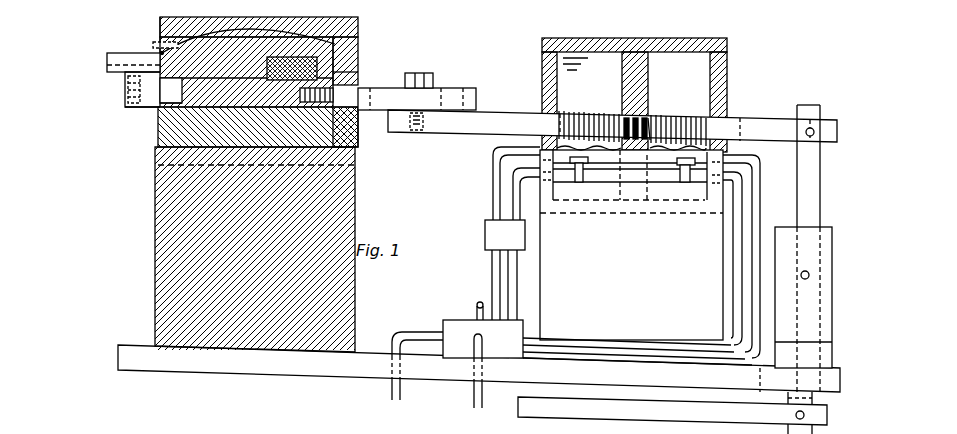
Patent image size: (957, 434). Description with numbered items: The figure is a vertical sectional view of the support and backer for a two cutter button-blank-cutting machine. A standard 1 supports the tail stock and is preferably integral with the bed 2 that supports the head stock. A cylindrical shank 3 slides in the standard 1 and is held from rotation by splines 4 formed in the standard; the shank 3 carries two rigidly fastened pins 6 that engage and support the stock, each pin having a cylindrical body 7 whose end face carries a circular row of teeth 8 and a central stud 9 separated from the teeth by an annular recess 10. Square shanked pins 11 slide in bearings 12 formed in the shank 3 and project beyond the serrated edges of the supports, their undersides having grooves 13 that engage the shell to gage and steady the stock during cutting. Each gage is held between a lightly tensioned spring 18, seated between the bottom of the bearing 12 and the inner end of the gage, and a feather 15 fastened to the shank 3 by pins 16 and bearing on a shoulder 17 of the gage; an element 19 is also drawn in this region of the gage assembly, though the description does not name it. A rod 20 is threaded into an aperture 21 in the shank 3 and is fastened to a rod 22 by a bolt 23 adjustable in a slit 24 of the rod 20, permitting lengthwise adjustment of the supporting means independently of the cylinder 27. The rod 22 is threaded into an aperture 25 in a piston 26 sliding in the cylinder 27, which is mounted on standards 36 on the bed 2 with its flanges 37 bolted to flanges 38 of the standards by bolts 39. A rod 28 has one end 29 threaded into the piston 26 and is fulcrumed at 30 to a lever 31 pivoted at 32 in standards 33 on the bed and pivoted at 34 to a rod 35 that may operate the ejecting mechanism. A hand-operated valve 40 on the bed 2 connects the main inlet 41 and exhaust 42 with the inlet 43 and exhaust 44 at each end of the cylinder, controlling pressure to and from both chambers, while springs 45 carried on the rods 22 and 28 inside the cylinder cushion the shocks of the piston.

The standard 1 is at (155, 246).
The bed 2 is at (479, 368).
The cylindrical shank 3 is at (158, 136).
The splines 4 is at (355, 165).
The pins 6 is at (168, 99).
The cylindrical body 7 is at (158, 108).
The teeth 8 is at (126, 106).
The central stud 9 is at (126, 94).
The annular recess 10 is at (125, 80).
The square shanked pins 11 is at (108, 53).
The bearings 12 is at (358, 37).
The grooves 13 is at (108, 65).
The feather 15 is at (161, 40).
The pins 16 is at (156, 44).
The shoulder 17 is at (200, 27).
The spring 18 is at (358, 73).
The spring 19 is at (320, 66).
The rod 20 is at (478, 92).
The aperture 21 is at (392, 117).
The rod 22 is at (612, 126).
The bolt 23 is at (419, 73).
The slit 24 is at (446, 88).
The aperture 25 is at (623, 122).
The piston 26 is at (589, 63).
The cylinder 27 is at (727, 46).
The rod 28 is at (780, 131).
The end 29 is at (655, 125).
The fulcrum 30 is at (814, 129).
The lever 31 is at (808, 166).
The pivot 32 is at (805, 271).
The standards 33 is at (832, 312).
The pivot 34 is at (806, 415).
The rod 35 is at (672, 411).
The standards 36 is at (631, 243).
The flanges 37 is at (686, 184).
The flanges 38 is at (576, 183).
The bolts 39 is at (584, 164).
The hand-operated valve 40 is at (483, 330).
The main inlet 41 is at (474, 397).
The exhaust 42 is at (392, 393).
The inlet 43 is at (493, 176).
The exhaust 44 is at (513, 200).
The springs 45 is at (581, 112).